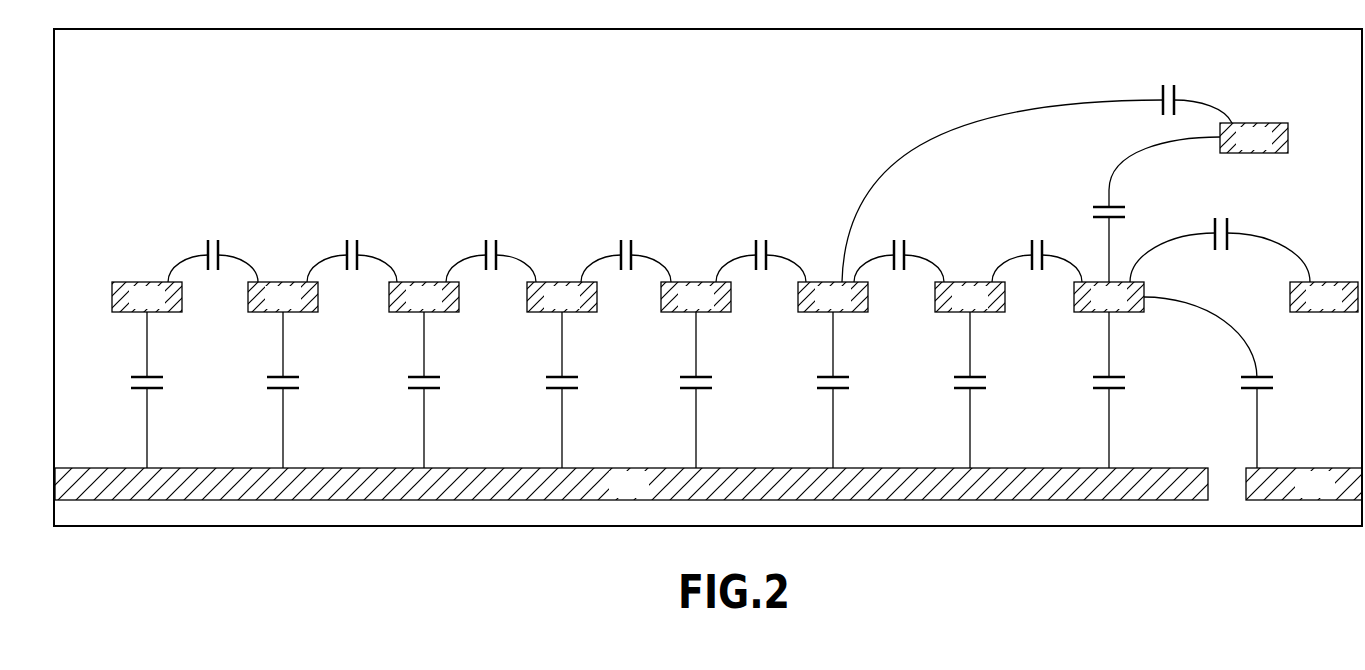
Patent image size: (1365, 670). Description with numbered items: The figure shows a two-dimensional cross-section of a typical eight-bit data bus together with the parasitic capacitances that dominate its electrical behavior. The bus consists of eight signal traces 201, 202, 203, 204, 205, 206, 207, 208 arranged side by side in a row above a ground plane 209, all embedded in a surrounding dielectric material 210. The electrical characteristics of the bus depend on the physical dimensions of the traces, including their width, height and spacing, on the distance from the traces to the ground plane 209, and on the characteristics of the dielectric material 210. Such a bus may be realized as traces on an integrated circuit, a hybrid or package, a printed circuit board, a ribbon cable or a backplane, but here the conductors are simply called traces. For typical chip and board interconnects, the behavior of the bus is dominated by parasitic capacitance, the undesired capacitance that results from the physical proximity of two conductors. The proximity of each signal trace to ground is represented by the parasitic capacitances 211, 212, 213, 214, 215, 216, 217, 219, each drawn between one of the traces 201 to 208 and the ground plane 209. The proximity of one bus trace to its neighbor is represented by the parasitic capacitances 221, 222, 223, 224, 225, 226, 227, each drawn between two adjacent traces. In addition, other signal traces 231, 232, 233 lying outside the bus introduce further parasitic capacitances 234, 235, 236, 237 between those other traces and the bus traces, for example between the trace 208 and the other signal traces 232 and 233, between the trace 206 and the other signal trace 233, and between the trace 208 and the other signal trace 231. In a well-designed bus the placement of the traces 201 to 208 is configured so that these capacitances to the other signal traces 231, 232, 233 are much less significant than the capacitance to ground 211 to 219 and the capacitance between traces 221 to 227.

The trace 201 is at (163, 309).
The trace 202 is at (299, 309).
The trace 203 is at (440, 309).
The trace 204 is at (578, 309).
The trace 205 is at (712, 309).
The trace 206 is at (849, 309).
The trace 207 is at (986, 309).
The trace 208 is at (1125, 309).
The ground plane 209 is at (644, 495).
The dielectric material 210 is at (134, 149).
The parasitic capacitance 211 is at (165, 382).
The parasitic capacitance 212 is at (301, 382).
The parasitic capacitance 213 is at (442, 382).
The parasitic capacitance 214 is at (580, 382).
The parasitic capacitance 215 is at (714, 382).
The parasitic capacitance 216 is at (851, 382).
The parasitic capacitance 217 is at (988, 382).
The parasitic capacitance 219 is at (1127, 382).
The parasitic capacitance 221 is at (228, 248).
The parasitic capacitance 222 is at (367, 248).
The parasitic capacitance 223 is at (506, 248).
The parasitic capacitance 224 is at (641, 248).
The parasitic capacitance 225 is at (776, 248).
The parasitic capacitance 226 is at (914, 248).
The parasitic capacitance 227 is at (1052, 244).
The other signal trace 231 is at (1330, 495).
The other signal trace 232 is at (1340, 309).
The other signal trace 233 is at (1270, 150).
The parasitic capacitance 234 is at (1275, 382).
The parasitic capacitance 235 is at (1232, 222).
The parasitic capacitance 236 is at (1100, 193).
The parasitic capacitance 237 is at (1157, 95).